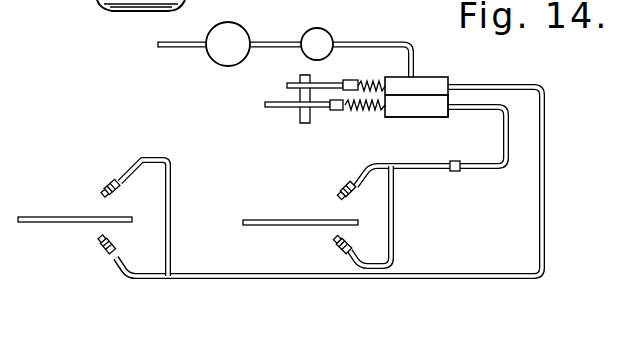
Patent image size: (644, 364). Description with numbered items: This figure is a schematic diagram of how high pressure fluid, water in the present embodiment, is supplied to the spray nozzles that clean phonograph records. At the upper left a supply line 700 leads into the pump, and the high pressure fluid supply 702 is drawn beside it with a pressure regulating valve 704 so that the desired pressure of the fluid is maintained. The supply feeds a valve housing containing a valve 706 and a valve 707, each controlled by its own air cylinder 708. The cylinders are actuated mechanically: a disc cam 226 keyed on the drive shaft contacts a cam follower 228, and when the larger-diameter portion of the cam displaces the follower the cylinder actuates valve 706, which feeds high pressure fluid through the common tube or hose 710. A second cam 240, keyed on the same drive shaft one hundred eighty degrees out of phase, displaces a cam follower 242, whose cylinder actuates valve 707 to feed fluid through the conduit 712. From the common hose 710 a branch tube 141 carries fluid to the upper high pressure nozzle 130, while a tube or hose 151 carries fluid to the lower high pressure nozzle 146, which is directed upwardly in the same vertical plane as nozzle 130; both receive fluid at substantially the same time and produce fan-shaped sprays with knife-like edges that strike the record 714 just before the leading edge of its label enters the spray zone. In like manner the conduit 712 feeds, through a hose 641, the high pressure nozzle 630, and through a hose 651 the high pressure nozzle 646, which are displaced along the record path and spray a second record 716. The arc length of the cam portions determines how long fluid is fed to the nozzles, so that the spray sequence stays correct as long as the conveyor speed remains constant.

The inlet pipe 700 is at (165, 48).
The pressure regulating valve 704 is at (243, 18).
The high pressure fluid supply 702 is at (329, 33).
The valve 706 is at (452, 70).
The valve 707 is at (436, 118).
The air cylinder 708 is at (364, 77).
The disc cam 226 is at (290, 82).
The cam follower 228 is at (347, 80).
The cam 240 is at (283, 108).
The cam follower 242 is at (336, 111).
The common tube or hose 710 is at (540, 229).
The conduit 712 is at (458, 171).
The tube 141 is at (172, 174).
The tube or hose 151 is at (116, 258).
The high pressure nozzle 130 is at (107, 186).
The high pressure nozzle 146 is at (100, 244).
The record 714 is at (51, 214).
The second plate 716 is at (276, 216).
The upper feed pipe 641 is at (367, 170).
The high pressure nozzle 630 is at (340, 188).
The lower feed pipe 651 is at (396, 240).
The high pressure nozzle 646 is at (337, 245).